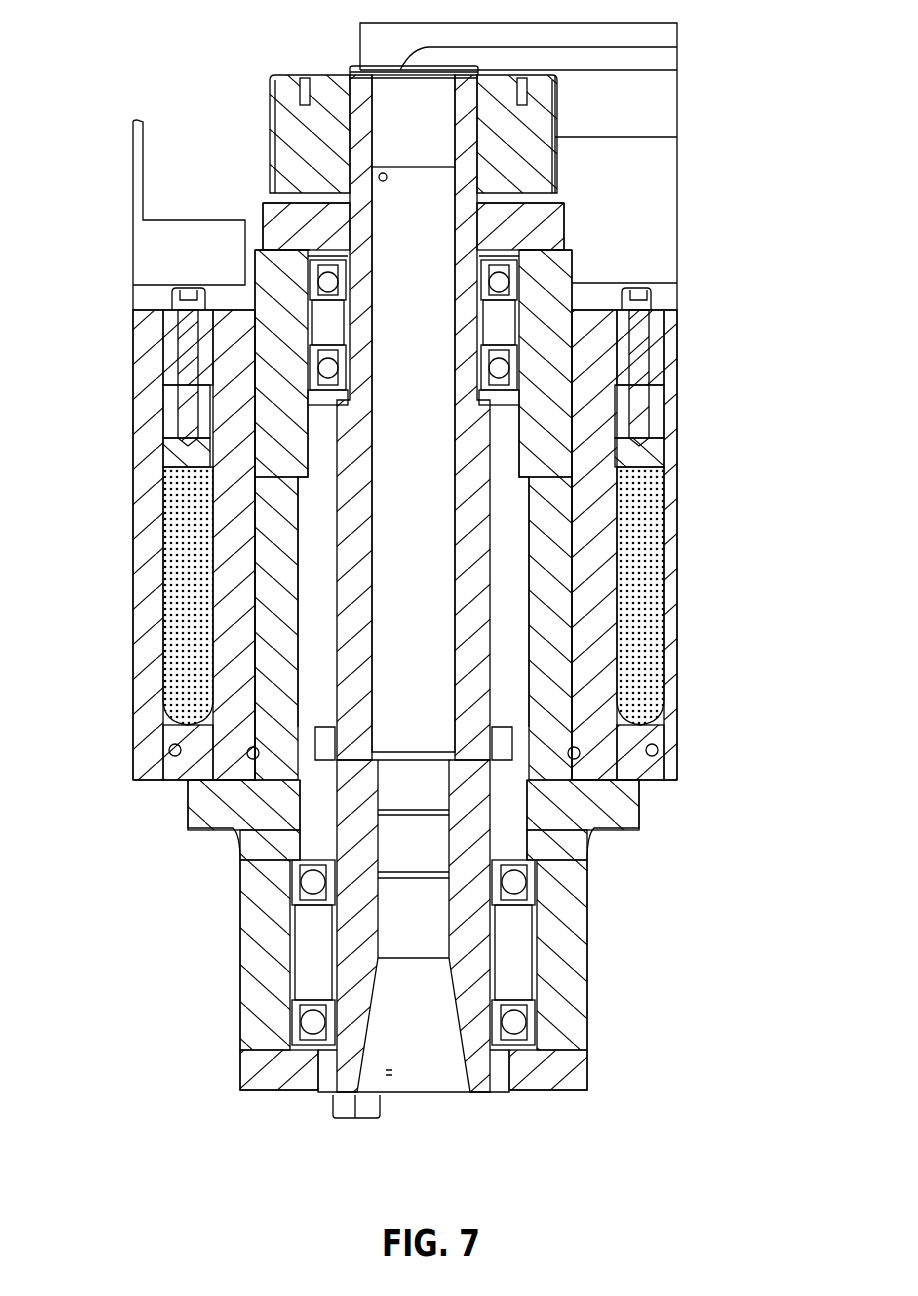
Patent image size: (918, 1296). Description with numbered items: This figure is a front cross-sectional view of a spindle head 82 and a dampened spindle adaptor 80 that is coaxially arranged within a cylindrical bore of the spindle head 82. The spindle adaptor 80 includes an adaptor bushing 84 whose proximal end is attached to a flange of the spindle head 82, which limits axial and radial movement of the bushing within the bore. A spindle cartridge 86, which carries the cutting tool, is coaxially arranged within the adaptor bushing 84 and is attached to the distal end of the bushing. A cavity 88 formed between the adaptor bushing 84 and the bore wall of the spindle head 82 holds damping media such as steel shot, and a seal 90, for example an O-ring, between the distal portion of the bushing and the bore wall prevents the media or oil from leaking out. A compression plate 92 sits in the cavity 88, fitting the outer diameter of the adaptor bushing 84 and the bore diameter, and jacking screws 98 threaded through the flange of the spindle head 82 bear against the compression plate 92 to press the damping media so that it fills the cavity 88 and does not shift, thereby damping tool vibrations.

The dampened spindle adaptor 80 is at (141, 822).
The spindle head 82 is at (642, 98).
The adaptor bushing 84 is at (619, 659).
The spindle cartridge 86 is at (592, 946).
The cavity 88 is at (638, 565).
The seal 90 is at (172, 746).
The compression plate 92 is at (663, 448).
The jacking screws 98 is at (660, 312).